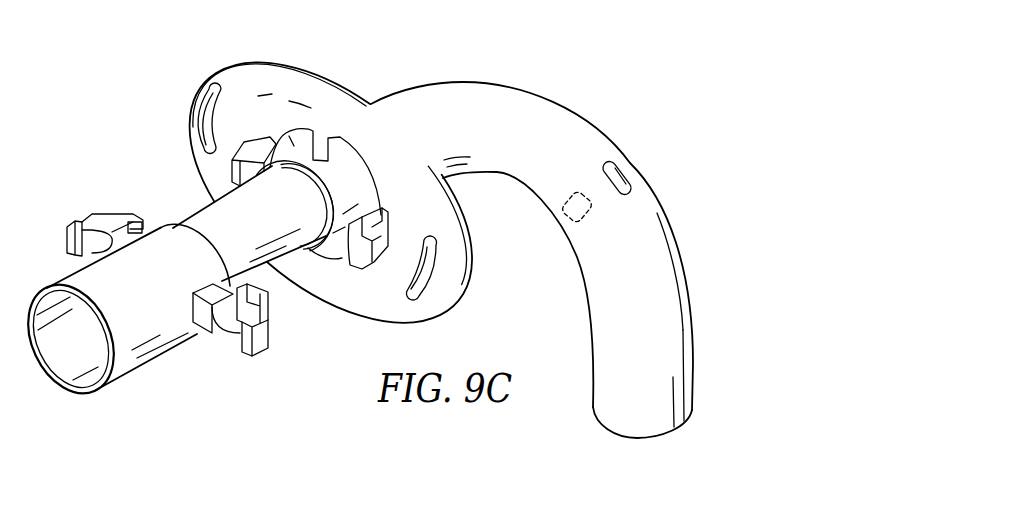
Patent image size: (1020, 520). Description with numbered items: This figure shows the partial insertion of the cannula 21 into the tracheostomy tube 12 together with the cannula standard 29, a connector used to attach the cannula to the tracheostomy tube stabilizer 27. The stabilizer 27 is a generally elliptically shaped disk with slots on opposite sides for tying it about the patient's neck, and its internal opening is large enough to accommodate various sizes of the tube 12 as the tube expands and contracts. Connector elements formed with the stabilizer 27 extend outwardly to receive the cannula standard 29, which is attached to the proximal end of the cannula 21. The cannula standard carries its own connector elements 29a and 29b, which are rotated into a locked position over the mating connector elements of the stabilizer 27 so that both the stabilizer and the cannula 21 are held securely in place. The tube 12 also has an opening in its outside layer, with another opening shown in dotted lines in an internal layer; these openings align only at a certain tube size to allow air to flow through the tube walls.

The tracheostomy tube 12 is at (523, 79).
The cannula 21 is at (195, 225).
The stabilizer 27 is at (286, 58).
The cannula standard 29 is at (163, 365).
The connector element 29a is at (88, 221).
The connector element 29b is at (262, 347).